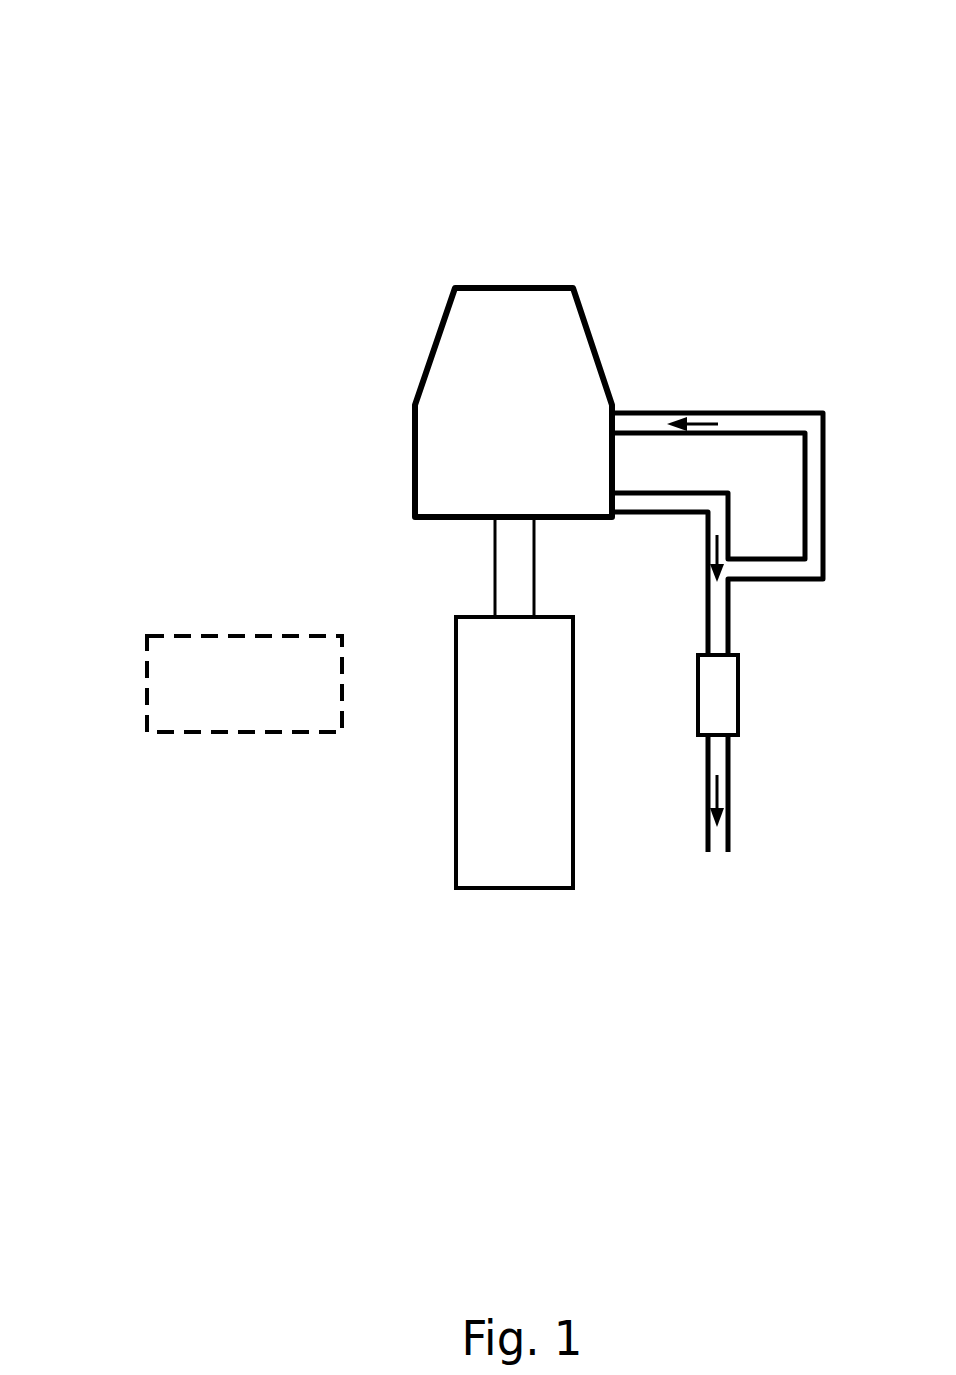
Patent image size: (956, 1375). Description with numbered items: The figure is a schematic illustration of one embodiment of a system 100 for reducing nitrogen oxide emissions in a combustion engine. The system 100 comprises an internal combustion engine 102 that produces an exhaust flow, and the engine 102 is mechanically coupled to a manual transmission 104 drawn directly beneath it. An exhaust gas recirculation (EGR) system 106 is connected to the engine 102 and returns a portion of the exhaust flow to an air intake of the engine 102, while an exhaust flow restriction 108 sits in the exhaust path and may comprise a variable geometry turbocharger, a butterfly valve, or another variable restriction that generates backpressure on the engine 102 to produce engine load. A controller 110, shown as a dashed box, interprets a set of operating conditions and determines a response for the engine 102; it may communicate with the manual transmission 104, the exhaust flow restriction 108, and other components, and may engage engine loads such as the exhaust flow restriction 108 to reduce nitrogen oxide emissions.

The system 100 is at (102, 60).
The internal combustion engine 102 is at (538, 421).
The manual transmission 104 is at (495, 741).
The exhaust gas recirculation (EGR) system 106 is at (748, 413).
The exhaust flow restriction 108 is at (738, 672).
The controller 110 is at (223, 697).